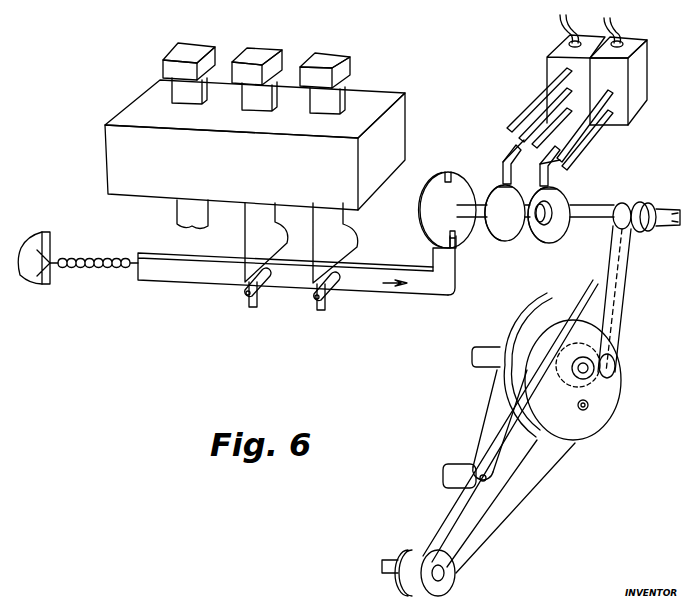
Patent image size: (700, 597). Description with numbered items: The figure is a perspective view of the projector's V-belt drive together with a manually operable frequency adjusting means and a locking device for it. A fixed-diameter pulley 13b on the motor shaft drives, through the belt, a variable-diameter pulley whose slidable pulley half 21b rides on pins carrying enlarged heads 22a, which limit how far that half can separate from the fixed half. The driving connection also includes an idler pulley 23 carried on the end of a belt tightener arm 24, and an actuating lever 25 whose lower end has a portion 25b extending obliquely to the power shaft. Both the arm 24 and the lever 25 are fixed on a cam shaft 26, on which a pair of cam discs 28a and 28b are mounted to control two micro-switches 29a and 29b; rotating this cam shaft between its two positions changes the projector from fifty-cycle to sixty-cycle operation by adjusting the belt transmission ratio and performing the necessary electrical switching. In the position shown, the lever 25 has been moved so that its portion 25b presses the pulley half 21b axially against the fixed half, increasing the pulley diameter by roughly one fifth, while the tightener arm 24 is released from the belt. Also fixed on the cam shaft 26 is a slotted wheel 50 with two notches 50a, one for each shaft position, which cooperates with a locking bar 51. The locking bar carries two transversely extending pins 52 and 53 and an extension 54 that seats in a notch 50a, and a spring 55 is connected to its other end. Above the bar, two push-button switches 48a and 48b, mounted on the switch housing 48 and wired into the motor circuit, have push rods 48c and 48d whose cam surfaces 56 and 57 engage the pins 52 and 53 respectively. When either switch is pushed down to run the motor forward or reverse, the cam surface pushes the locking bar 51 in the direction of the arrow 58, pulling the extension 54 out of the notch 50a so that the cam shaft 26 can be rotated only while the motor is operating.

The fixed-diameter pulley 13b is at (450, 577).
The pulley half 21b is at (614, 394).
The enlarged heads 22a is at (586, 407).
The idler pulley 23 is at (450, 474).
The belt tightener arm 24 is at (545, 460).
The actuating lever 25 is at (620, 300).
The oblique portion 25b is at (618, 357).
The cam shaft 26 is at (598, 206).
The cam disc 28a is at (498, 188).
The cam disc 28b is at (560, 192).
The micro-switch 29a is at (548, 65).
The micro-switch 29b is at (640, 103).
The switch box 48 is at (372, 102).
The push-button switch 48a is at (252, 57).
The push-button switch 48b is at (330, 60).
The push rod 48c is at (256, 247).
The push rod 48d is at (346, 250).
The slotted wheel 50 is at (438, 207).
The notches 50a is at (449, 177).
The locking bar 51 is at (170, 270).
The pin 52 is at (242, 290).
The pin 53 is at (318, 298).
The extension 54 is at (452, 276).
The spring 55 is at (97, 270).
The cam surface 56 is at (282, 288).
The cam surface 57 is at (342, 288).
The arrow 58 is at (396, 293).